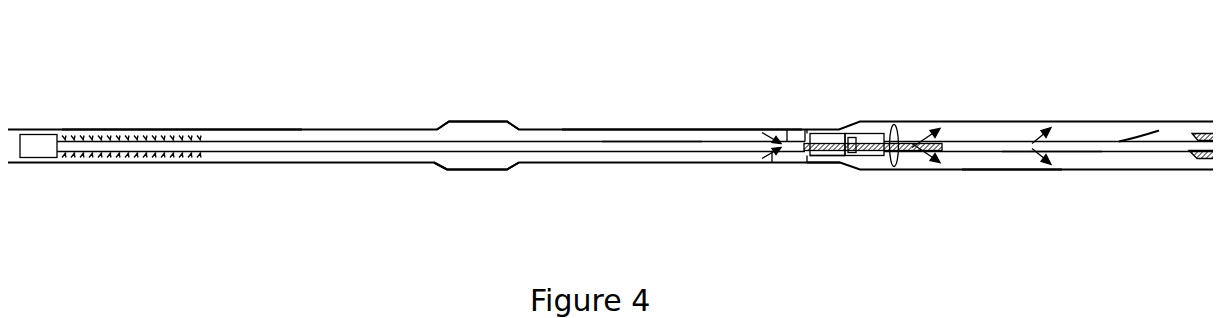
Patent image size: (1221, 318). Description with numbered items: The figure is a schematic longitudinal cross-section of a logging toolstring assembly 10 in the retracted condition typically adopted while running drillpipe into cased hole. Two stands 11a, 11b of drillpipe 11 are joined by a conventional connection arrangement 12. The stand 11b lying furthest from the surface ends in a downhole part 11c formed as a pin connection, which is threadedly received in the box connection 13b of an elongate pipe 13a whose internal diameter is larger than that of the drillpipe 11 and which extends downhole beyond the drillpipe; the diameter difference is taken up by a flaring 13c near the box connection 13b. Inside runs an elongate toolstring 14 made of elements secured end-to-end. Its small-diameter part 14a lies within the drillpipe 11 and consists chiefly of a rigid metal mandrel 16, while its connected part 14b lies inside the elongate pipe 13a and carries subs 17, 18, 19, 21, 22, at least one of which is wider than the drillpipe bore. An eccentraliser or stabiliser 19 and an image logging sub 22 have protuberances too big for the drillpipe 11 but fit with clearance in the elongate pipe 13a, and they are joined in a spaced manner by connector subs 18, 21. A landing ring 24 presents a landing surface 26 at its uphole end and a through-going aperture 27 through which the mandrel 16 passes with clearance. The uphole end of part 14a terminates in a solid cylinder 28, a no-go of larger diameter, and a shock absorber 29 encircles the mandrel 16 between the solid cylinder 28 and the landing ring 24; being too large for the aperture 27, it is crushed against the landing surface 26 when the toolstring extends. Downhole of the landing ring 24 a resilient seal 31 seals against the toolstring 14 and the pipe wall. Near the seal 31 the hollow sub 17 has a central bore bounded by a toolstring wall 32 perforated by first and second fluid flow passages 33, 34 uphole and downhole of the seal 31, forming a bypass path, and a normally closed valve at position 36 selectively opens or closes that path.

The logging toolstring assembly 10 is at (408, 98).
The drillpipe 11 is at (153, 163).
The drillpipe stand 11a is at (310, 128).
The drillpipe stand 11b is at (593, 128).
The downhole part 11c is at (838, 162).
The connection arrangement 12 is at (488, 112).
The elongate pipe 13a is at (1007, 121).
The box connection 13b is at (846, 160).
The flaring 13c is at (853, 162).
The elongate toolstring 14 is at (415, 143).
The elongate part of toolstring 14a is at (657, 143).
The elongate part of toolstring 14b is at (1070, 153).
The mandrel 16 is at (270, 146).
The sub 17 is at (922, 158).
The connector sub 18 is at (1005, 170).
The eccentraliser or stabiliser 19 is at (1084, 140).
The connector sub 21 is at (1165, 134).
The image logging sub 22 is at (1197, 168).
The landing ring 24 is at (814, 162).
The landing surface 26 is at (804, 132).
The through-going aperture 27 is at (874, 132).
The solid cylinder 28 is at (43, 148).
The shock absorber 29 is at (100, 134).
The seal 31 is at (893, 168).
The toolstring wall 32 is at (790, 132).
The first fluid flow passage 33 is at (767, 158).
The second fluid flow passage 34 is at (926, 130).
The valve position 36 is at (758, 132).